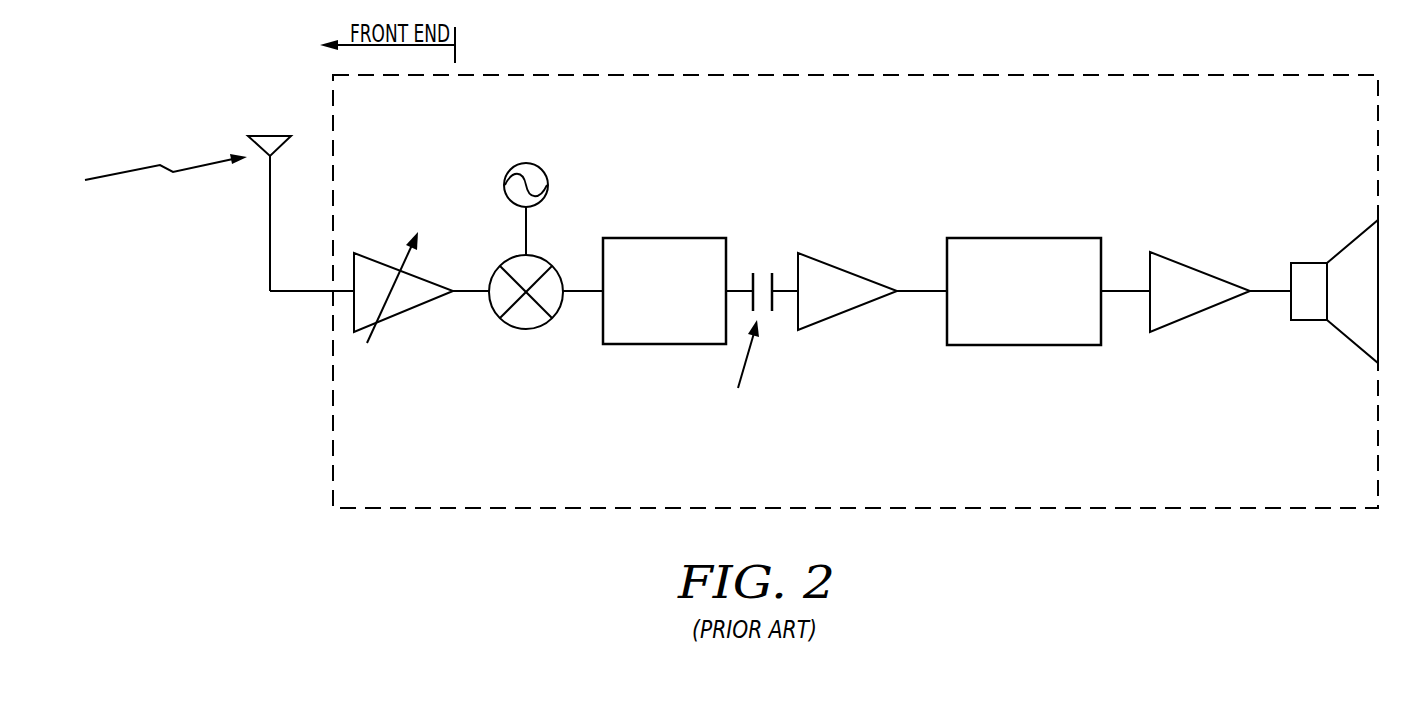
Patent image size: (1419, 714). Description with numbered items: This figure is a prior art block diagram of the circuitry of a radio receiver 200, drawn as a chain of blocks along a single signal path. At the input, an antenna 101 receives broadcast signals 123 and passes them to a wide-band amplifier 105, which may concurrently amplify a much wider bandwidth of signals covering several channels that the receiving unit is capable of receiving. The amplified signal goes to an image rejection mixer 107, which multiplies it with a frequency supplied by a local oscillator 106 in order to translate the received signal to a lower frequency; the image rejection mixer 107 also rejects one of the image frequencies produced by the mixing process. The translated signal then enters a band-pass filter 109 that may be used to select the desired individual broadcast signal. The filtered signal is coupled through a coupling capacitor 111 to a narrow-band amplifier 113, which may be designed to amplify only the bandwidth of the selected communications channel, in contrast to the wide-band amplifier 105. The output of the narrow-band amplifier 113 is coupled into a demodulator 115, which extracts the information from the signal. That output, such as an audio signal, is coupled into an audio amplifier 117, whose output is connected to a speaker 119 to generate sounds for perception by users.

The antenna 101 is at (268, 135).
The wide-band amplifier 105 is at (380, 258).
The local oscillator 106 is at (503, 190).
The image rejection mixer 107 is at (549, 259).
The band-pass filter 109 is at (667, 238).
The coupling capacitor 111 is at (765, 268).
The narrow-band amplifier 113 is at (848, 272).
The demodulator 115 is at (1025, 238).
The audio amplifier 117 is at (1197, 270).
The speaker 119 is at (1343, 249).
The broadcast signals 123 is at (166, 216).
The radio receiver 200 is at (1355, 501).